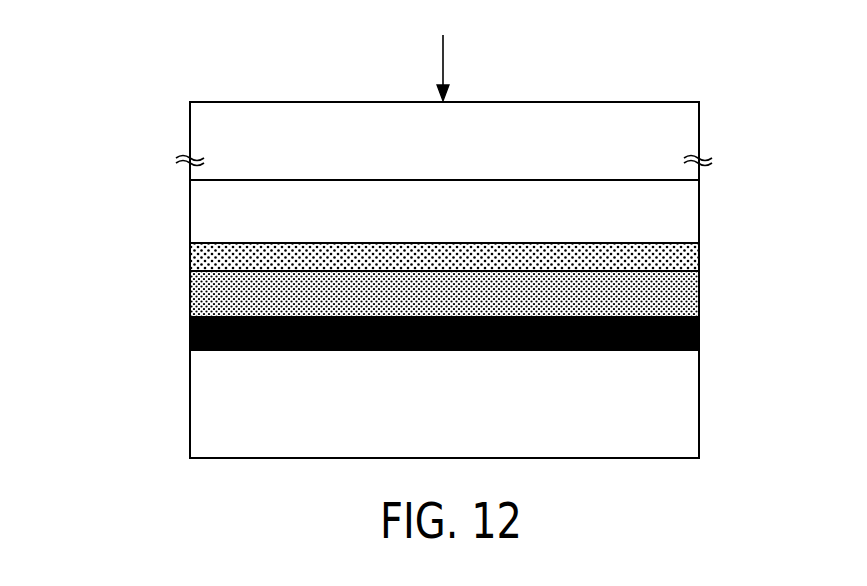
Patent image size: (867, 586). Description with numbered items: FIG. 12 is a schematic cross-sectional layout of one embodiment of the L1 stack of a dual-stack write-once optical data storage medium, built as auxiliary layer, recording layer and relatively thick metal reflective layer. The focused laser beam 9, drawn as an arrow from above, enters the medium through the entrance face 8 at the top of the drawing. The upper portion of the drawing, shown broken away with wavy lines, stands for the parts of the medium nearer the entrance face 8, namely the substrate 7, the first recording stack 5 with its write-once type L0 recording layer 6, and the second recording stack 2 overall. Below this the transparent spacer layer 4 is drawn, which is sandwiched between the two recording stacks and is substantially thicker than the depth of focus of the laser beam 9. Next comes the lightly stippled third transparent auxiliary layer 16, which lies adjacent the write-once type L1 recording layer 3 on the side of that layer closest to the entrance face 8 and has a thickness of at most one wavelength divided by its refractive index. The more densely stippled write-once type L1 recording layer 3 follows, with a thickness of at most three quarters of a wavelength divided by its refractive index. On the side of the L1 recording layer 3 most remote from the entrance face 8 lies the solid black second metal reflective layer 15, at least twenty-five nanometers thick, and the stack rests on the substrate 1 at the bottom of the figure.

The substrate 1 is at (212, 400).
The second recording stack 2 is at (386, 141).
The write-once type L1 recording layer 3 is at (207, 300).
The transparent spacer layer 4 is at (213, 205).
The first recording stack 5 is at (386, 141).
The write-once type L0 recording layer 6 is at (386, 141).
The substrate 7 is at (213, 130).
The entrance face 8 is at (281, 100).
The focused laser beam 9 is at (443, 62).
The second metal reflective layer 15 is at (192, 337).
The third transparent auxiliary layer 16 is at (210, 253).